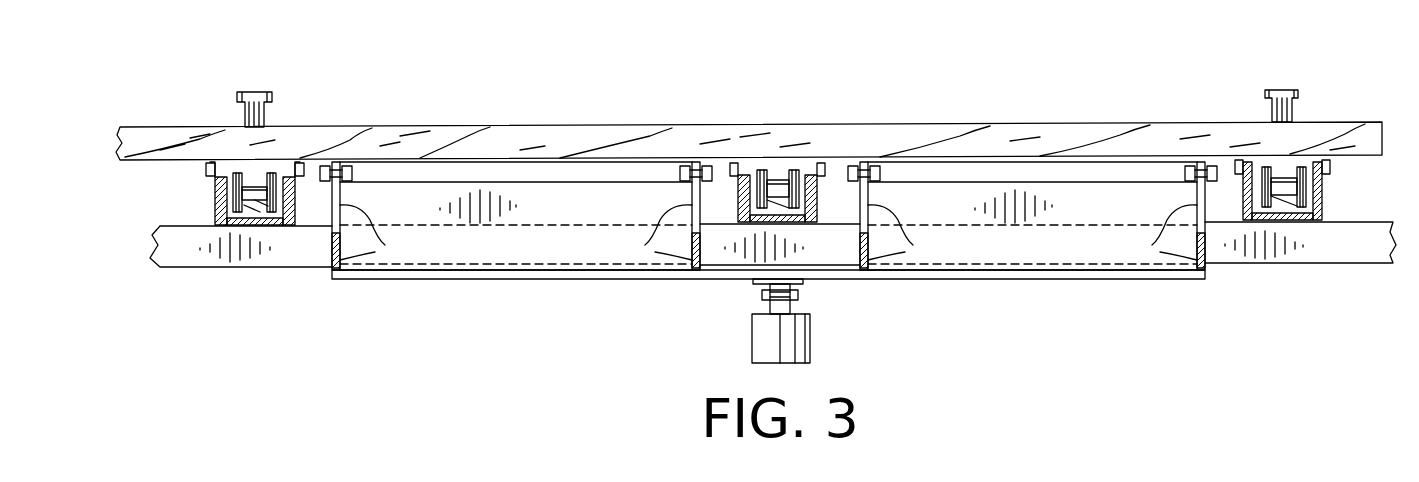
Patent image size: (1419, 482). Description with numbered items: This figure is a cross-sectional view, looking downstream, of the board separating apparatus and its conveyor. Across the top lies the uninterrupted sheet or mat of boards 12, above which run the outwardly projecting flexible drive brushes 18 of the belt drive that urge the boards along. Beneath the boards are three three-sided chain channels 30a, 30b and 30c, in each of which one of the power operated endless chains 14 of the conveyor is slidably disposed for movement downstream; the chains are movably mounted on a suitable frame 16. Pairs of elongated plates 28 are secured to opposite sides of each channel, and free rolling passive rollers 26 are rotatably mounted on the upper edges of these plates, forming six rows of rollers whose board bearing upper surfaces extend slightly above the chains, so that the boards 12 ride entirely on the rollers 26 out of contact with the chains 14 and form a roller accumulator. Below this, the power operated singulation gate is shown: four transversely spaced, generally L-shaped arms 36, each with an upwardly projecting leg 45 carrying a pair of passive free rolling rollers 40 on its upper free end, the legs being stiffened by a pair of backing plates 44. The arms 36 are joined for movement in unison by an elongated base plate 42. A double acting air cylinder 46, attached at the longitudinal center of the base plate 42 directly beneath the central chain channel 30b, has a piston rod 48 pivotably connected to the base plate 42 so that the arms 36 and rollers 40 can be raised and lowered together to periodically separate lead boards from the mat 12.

The sheet or mat of boards 12 is at (470, 126).
The endless chains 14 is at (255, 185).
The frame 16 is at (1358, 262).
The drive brushes 18 is at (245, 125).
The passive rollers 26 is at (212, 170).
The elongated plates 28 is at (215, 200).
The chain channel 30a is at (1308, 218).
The chain channel 30b is at (800, 222).
The chain channel 30c is at (262, 222).
The arms 36 is at (340, 260).
The free rolling rollers 40 is at (880, 170).
The base plate 42 is at (1003, 280).
The backing plates 44 is at (518, 182).
The upwardly projecting leg 45 is at (352, 172).
The double acting air cylinder 46 is at (748, 338).
The piston rod 48 is at (795, 308).